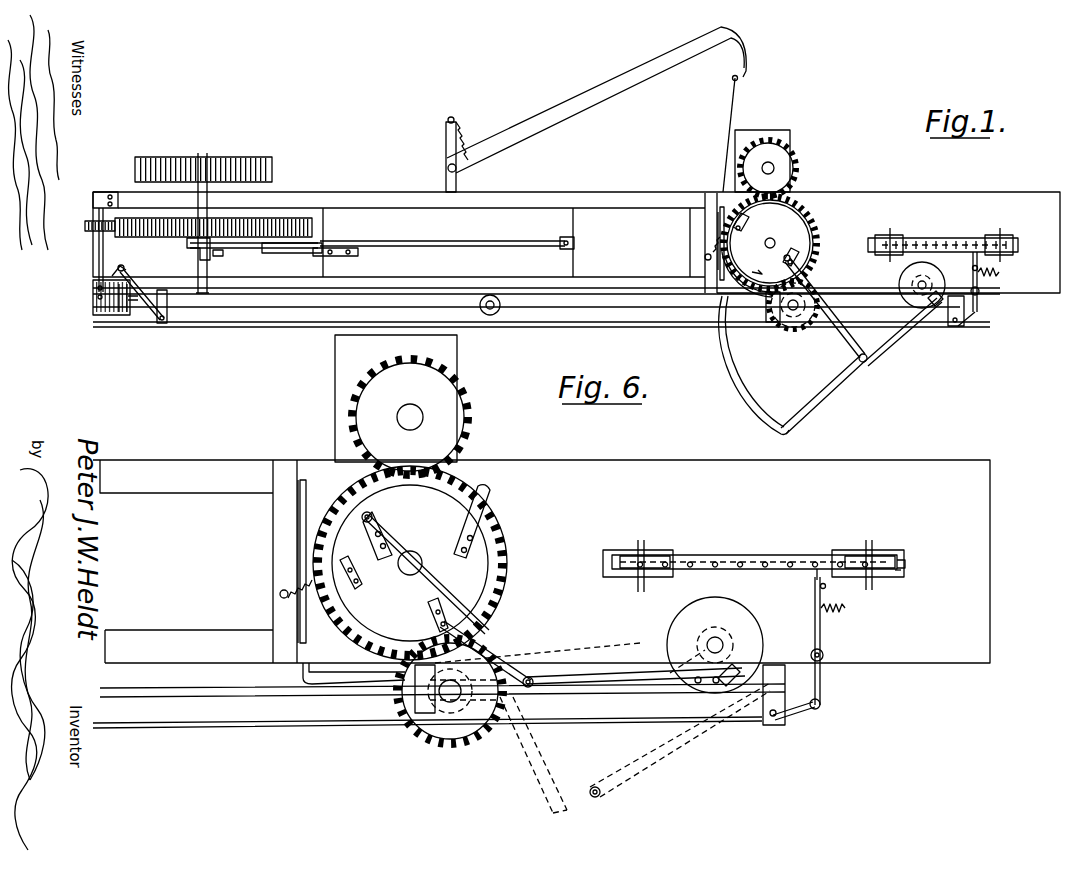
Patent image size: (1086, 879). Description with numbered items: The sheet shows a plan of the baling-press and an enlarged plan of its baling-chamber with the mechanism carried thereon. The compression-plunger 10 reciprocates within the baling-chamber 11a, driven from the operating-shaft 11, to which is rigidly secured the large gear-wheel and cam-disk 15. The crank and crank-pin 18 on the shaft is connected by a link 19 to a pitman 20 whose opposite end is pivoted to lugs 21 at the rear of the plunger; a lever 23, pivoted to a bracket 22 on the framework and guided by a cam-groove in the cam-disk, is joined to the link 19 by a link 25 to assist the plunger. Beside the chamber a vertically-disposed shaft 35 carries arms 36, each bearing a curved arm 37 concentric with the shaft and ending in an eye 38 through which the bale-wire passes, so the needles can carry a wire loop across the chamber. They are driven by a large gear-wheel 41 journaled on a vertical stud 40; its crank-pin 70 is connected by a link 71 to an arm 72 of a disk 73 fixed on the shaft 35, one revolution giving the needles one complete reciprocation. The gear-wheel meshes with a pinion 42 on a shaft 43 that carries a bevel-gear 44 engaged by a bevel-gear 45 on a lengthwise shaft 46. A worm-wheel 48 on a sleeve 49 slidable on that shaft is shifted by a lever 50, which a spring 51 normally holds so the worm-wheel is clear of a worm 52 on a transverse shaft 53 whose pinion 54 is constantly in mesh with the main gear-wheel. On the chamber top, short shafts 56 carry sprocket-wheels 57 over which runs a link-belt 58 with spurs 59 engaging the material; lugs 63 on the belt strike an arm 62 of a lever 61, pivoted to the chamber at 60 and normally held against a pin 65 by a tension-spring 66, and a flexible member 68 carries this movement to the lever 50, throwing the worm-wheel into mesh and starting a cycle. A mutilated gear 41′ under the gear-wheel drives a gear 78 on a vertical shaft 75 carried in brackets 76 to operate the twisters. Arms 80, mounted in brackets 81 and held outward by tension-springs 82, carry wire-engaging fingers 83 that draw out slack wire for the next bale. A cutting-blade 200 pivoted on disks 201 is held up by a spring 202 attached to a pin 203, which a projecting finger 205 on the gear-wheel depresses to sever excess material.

In FIG. 1, the compression-plunger 10 is at (601, 242).
In FIG. 1, the operating-shaft 11 is at (212, 157).
In FIG. 1, the baling-chamber 11a is at (542, 217).
In FIG. 6, the baling-chamber 11a is at (223, 525).
In FIG. 1, the large gear-wheel and cam-disk 15 is at (270, 220).
In FIG. 1, the crank and crank-pin 18 is at (186, 246).
In FIG. 1, the link 19 is at (252, 250).
In FIG. 1, the pitman 20 is at (435, 241).
In FIG. 1, the lugs 21 is at (562, 248).
In FIG. 1, the bracket 22 is at (325, 258).
In FIG. 1, the lever 23 is at (293, 254).
In FIG. 1, the link 25 is at (222, 258).
In FIG. 1, the vertically-disposed shaft 35 is at (926, 290).
In FIG. 6, the vertically-disposed shaft 35 is at (720, 640).
In FIG. 1, the arms 36 is at (832, 394).
In FIG. 6, the arms 36 is at (634, 750).
In FIG. 1, the curved arm 37 is at (736, 360).
In FIG. 6, the curved arm 37 is at (300, 672).
In FIG. 1, the eye 38 is at (712, 300).
In FIG. 1, the vertical stud 40 is at (786, 242).
In FIG. 6, the vertical stud 40 is at (414, 552).
In FIG. 1, the large gear-wheel 41 is at (788, 230).
In FIG. 6, the large gear-wheel 41 is at (475, 575).
In FIG. 1, the mutilated gear 41′ is at (776, 243).
In FIG. 6, the mutilated gear 41′ is at (490, 545).
In FIG. 1, the pinion 42 is at (795, 330).
In FIG. 6, the pinion 42 is at (450, 742).
In FIG. 1, the shaft 43 is at (792, 310).
In FIG. 6, the shaft 43 is at (455, 700).
In FIG. 1, the bevel-gear 44 is at (812, 322).
In FIG. 6, the bevel-gear 44 is at (440, 712).
In FIG. 1, the bevel-gear 45 is at (770, 322).
In FIG. 6, the bevel-gear 45 is at (400, 724).
In FIG. 1, the shaft 46 is at (676, 305).
In FIG. 6, the shaft 46 is at (294, 690).
In FIG. 1, the worm-wheel 48 is at (122, 314).
In FIG. 1, the sleeve 49 is at (134, 302).
In FIG. 1, the lever 50 is at (150, 312).
In FIG. 1, the spring 51 is at (121, 265).
In FIG. 1, the worm 52 is at (98, 314).
In FIG. 1, the transverse shaft 53 is at (97, 250).
In FIG. 1, the pinion 54 is at (84, 223).
In FIG. 1, the short shafts 56 is at (890, 235).
In FIG. 6, the short shafts 56 is at (636, 550).
In FIG. 1, the sprocket-wheels 57 is at (1002, 236).
In FIG. 6, the sprocket-wheels 57 is at (646, 550).
In FIG. 1, the link-belt 58 is at (962, 238).
In FIG. 6, the link-belt 58 is at (762, 555).
In FIG. 6, the teeth or spurs 59 is at (905, 564).
In FIG. 1, the pivot 60 is at (980, 293).
In FIG. 6, the pivot 60 is at (824, 655).
In FIG. 1, the lever 61 is at (980, 280).
In FIG. 6, the lever 61 is at (824, 636).
In FIG. 1, the arm 62 is at (972, 268).
In FIG. 6, the arm 62 is at (815, 598).
In FIG. 6, the lugs 63 is at (900, 578).
In FIG. 6, the pin or stud 65 is at (828, 590).
In FIG. 1, the tension-spring 66 is at (1002, 271).
In FIG. 6, the tension-spring 66 is at (850, 612).
In FIG. 1, the flexible member 68 is at (518, 318).
In FIG. 6, the flexible member 68 is at (800, 716).
In FIG. 1, the crank-pin 70 is at (806, 266).
In FIG. 6, the crank-pin 70 is at (372, 516).
In FIG. 1, the link 71 is at (869, 356).
In FIG. 6, the link 71 is at (470, 628).
In FIG. 1, the arm 72 is at (904, 328).
In FIG. 6, the arm 72 is at (602, 680).
In FIG. 1, the disk 73 is at (912, 283).
In FIG. 6, the disk 73 is at (715, 634).
In FIG. 1, the vertical shaft 75 is at (770, 166).
In FIG. 6, the vertical shaft 75 is at (412, 415).
In FIG. 1, the brackets 76 is at (760, 140).
In FIG. 6, the brackets 76 is at (345, 366).
In FIG. 1, the gear 78 is at (790, 168).
In FIG. 6, the gear 78 is at (446, 427).
In FIG. 1, the arms 80 is at (590, 96).
In FIG. 1, the bracket 81 is at (445, 150).
In FIG. 1, the tension-spring 82 is at (474, 126).
In FIG. 1, the wire-engaging finger 83 is at (733, 80).
In FIG. 1, the cutting-blade 200 is at (720, 210).
In FIG. 6, the cutting-blade 200 is at (308, 510).
In FIG. 1, the disks 201 is at (718, 218).
In FIG. 6, the disks 201 is at (297, 529).
In FIG. 1, the spring 202 is at (705, 258).
In FIG. 6, the spring 202 is at (280, 596).
In FIG. 1, the pin 203 is at (714, 247).
In FIG. 6, the pin 203 is at (298, 564).
In FIG. 6, the projecting finger 205 is at (486, 502).